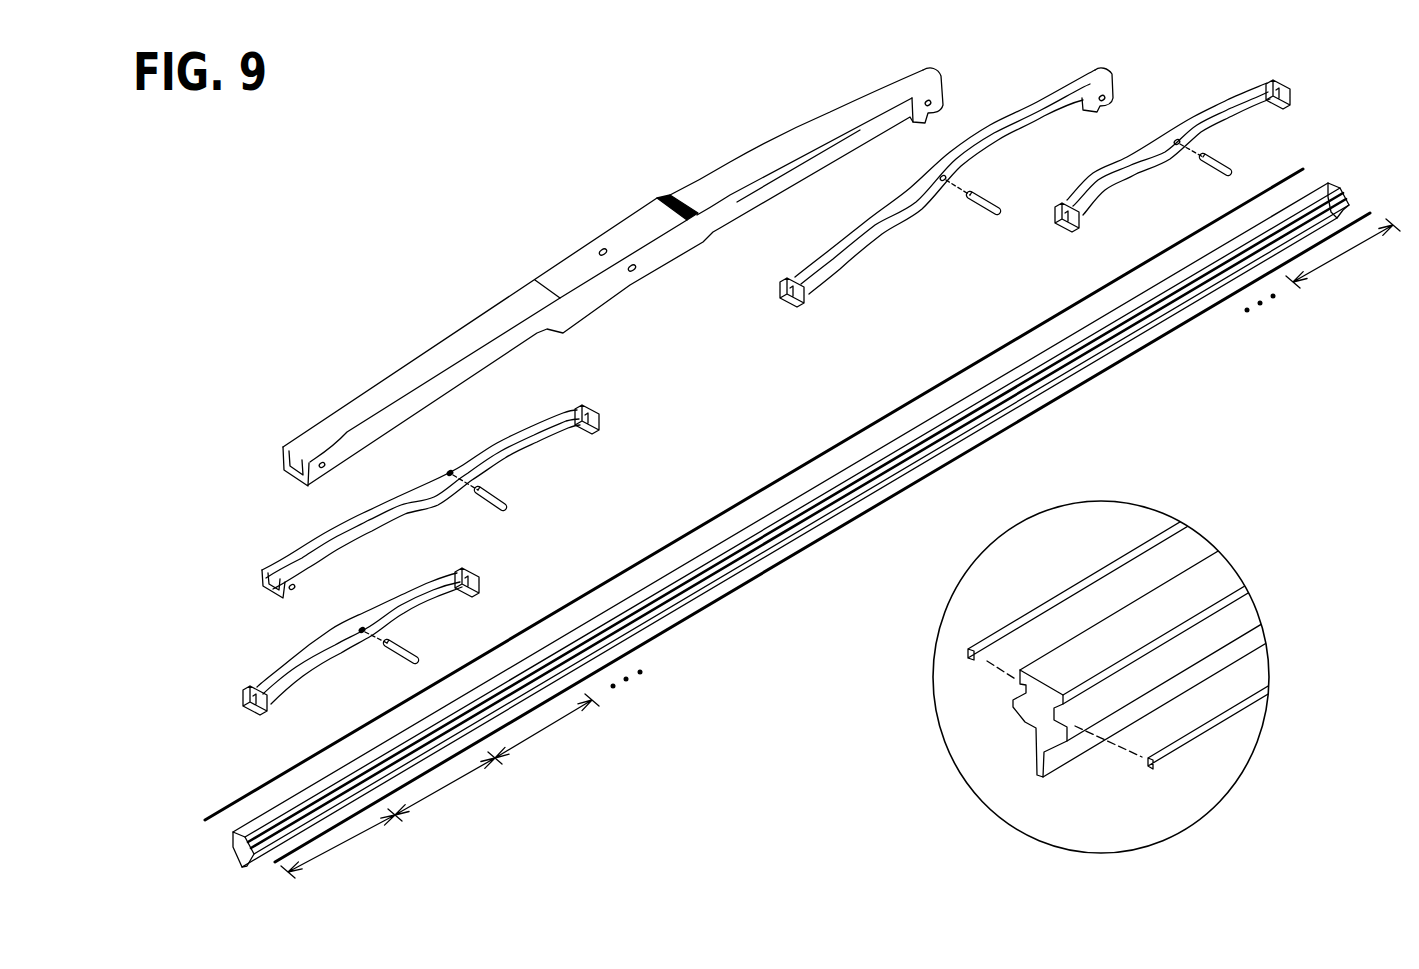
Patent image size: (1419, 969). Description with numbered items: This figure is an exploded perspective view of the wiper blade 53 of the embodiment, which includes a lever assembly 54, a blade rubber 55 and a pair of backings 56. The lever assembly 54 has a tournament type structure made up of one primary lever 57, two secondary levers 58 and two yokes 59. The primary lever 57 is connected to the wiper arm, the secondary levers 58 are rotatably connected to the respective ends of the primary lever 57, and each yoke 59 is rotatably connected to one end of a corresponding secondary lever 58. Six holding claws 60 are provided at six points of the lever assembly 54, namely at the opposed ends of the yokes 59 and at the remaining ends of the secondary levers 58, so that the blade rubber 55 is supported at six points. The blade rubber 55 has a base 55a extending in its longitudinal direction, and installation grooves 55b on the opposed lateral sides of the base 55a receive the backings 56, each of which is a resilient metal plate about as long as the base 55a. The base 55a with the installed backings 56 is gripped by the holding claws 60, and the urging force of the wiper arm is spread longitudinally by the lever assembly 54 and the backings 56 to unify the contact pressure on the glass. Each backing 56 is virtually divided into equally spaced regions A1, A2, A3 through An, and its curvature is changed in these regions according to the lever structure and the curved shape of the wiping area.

The wiper blade 53 is at (538, 173).
The lever assembly 54 is at (258, 437).
The blade rubber 55 is at (237, 857).
The base 55a is at (1063, 663).
The installation grooves 55b is at (1020, 690).
The backings 56 is at (205, 820).
The primary lever 57 is at (517, 300).
The secondary levers 58 is at (1042, 98).
The yokes 59 is at (1183, 120).
The holding claws 60 is at (1287, 110).
The region A1 is at (350, 843).
The region A2 is at (448, 783).
The region A3 is at (547, 727).
The region An is at (1345, 253).